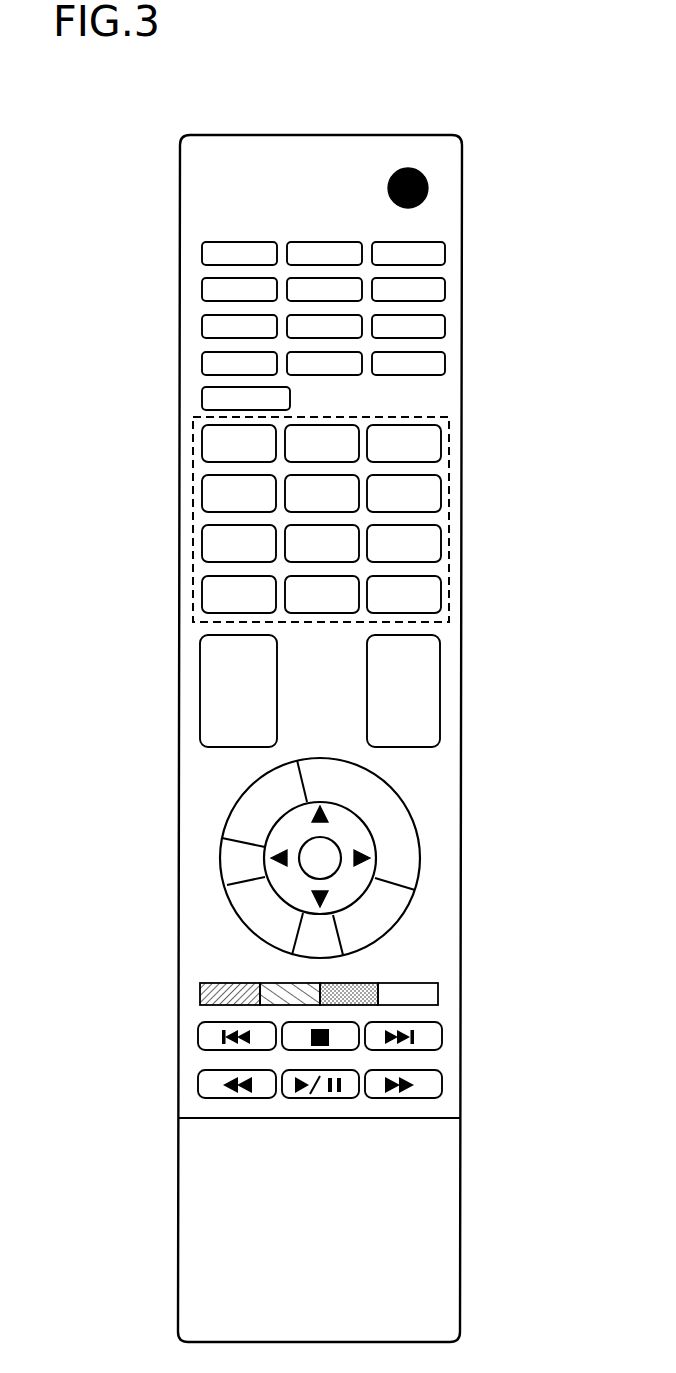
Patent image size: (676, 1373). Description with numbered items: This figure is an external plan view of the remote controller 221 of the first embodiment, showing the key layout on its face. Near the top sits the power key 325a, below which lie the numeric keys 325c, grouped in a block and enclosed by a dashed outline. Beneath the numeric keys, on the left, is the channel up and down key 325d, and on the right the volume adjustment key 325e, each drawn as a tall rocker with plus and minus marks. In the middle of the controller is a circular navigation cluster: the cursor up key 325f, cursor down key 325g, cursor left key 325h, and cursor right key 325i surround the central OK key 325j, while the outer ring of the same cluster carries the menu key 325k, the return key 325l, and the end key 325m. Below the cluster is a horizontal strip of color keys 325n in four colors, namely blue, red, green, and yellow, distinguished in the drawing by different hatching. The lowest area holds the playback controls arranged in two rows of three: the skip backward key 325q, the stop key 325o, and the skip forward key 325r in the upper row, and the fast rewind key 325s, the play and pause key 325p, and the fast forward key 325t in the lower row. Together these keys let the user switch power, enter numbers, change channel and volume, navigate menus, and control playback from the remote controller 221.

The remote controller 221 is at (324, 134).
The power key 325a is at (428, 190).
The numeric keys 325c is at (450, 522).
The channel up and down key 325d is at (200, 675).
The volume adjustment key 325e is at (440, 675).
The cursor up key 325f is at (325, 817).
The cursor down key 325g is at (325, 900).
The cursor left key 325h is at (280, 862).
The cursor right key 325i is at (367, 860).
The OK key 325j is at (302, 845).
The menu key 325k is at (246, 790).
The return key 325l is at (246, 932).
The end key 325m is at (390, 931).
The color keys 325n is at (438, 992).
The stop key 325o is at (348, 1050).
The play and pause key 325p is at (320, 1098).
The skip backward key 325q is at (198, 1036).
The skip forward key 325r is at (442, 1035).
The fast rewind key 325s is at (198, 1086).
The fast forward key 325t is at (442, 1083).